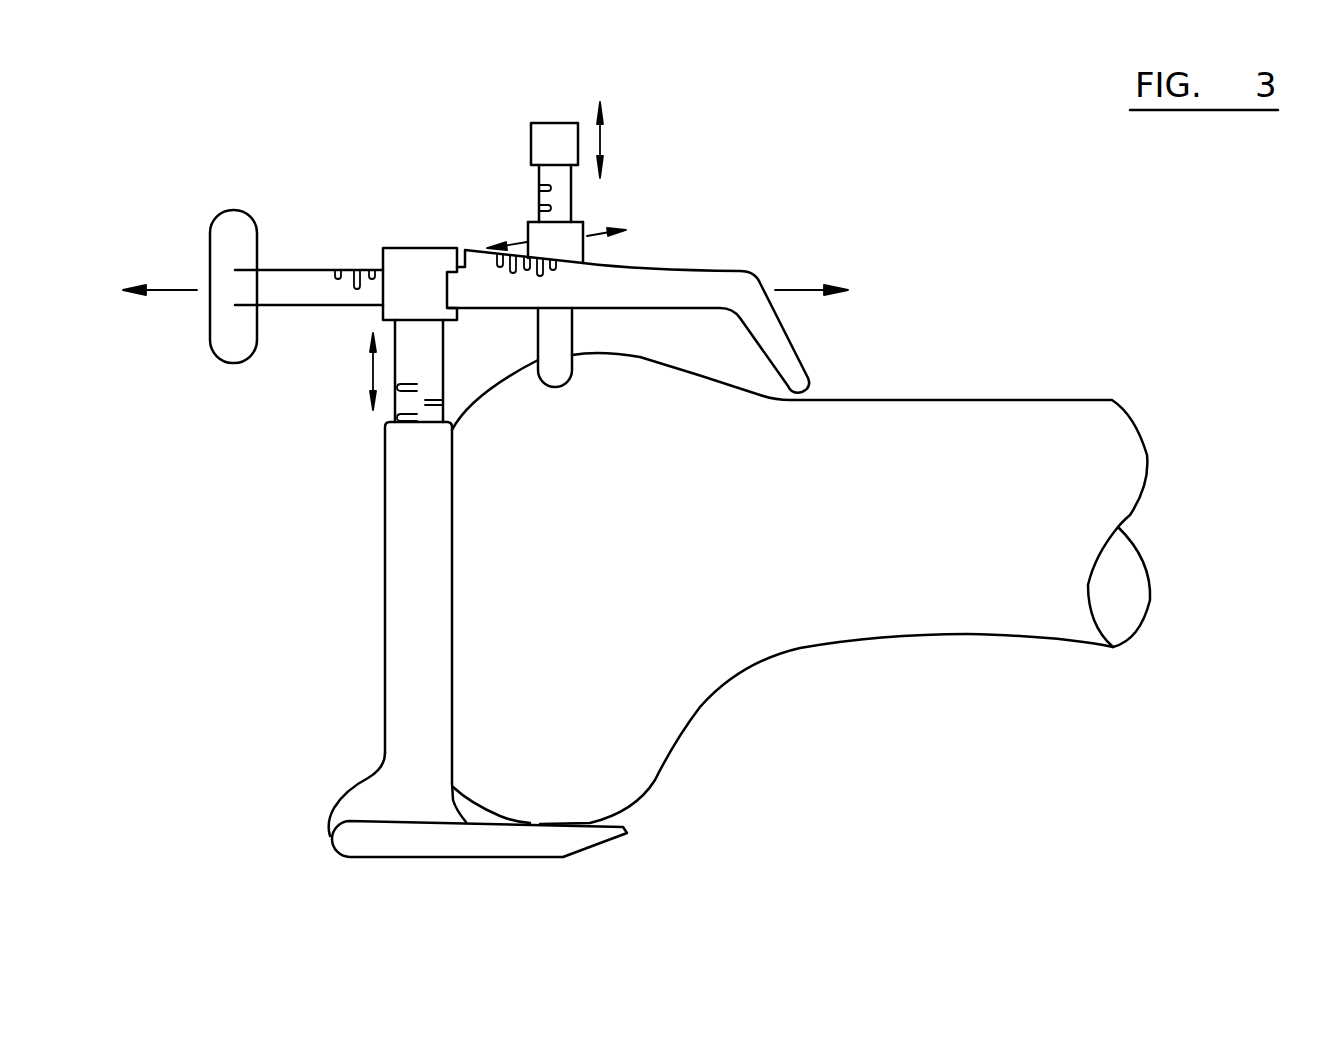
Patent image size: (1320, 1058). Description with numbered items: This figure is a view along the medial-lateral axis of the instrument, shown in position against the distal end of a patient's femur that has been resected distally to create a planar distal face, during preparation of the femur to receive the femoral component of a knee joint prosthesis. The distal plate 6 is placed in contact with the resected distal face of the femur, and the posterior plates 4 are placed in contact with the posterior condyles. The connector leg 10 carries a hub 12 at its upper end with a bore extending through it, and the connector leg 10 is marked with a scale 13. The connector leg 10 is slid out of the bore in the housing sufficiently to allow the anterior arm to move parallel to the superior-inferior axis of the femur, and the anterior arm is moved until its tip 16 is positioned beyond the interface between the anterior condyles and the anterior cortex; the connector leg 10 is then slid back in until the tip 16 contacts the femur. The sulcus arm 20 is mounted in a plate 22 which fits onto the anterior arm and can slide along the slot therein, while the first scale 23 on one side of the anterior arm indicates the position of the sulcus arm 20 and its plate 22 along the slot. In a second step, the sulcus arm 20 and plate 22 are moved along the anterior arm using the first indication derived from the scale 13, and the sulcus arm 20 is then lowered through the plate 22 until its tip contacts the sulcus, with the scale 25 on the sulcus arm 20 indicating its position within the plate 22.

The posterior plates 4 is at (573, 838).
The distal plate 6 is at (452, 582).
The connector leg 10 is at (417, 362).
The hub 12 is at (413, 258).
The scale 13 is at (410, 404).
The tip 16 is at (812, 393).
The sulcus arm 20 is at (355, 268).
The plate 22 is at (575, 234).
The first scale 23 is at (512, 297).
The scale 25 is at (575, 207).